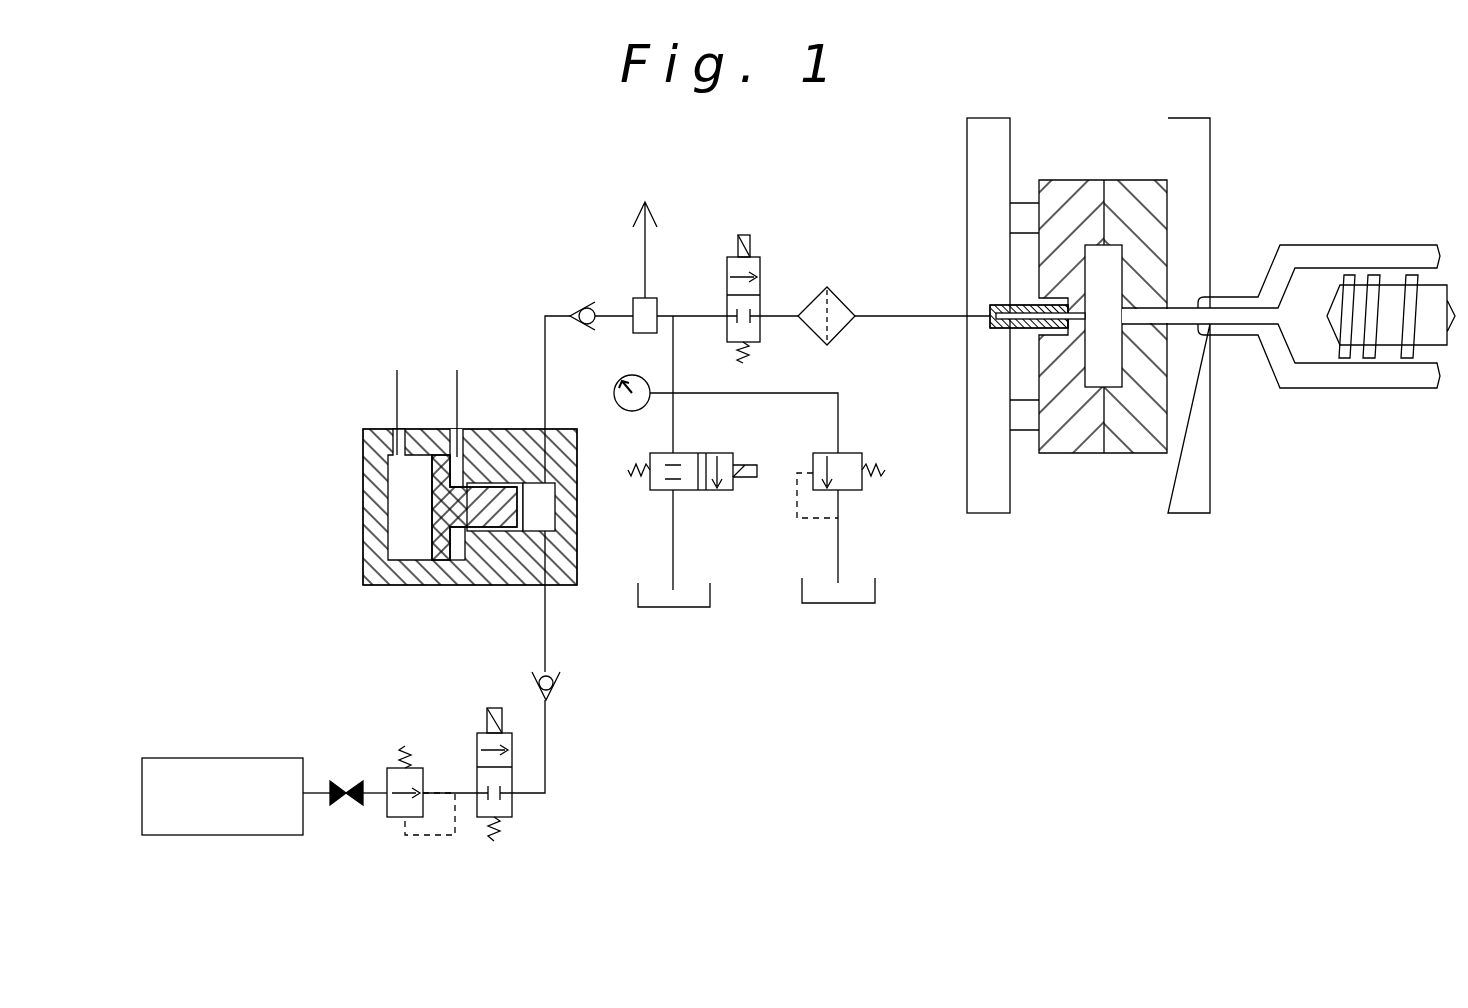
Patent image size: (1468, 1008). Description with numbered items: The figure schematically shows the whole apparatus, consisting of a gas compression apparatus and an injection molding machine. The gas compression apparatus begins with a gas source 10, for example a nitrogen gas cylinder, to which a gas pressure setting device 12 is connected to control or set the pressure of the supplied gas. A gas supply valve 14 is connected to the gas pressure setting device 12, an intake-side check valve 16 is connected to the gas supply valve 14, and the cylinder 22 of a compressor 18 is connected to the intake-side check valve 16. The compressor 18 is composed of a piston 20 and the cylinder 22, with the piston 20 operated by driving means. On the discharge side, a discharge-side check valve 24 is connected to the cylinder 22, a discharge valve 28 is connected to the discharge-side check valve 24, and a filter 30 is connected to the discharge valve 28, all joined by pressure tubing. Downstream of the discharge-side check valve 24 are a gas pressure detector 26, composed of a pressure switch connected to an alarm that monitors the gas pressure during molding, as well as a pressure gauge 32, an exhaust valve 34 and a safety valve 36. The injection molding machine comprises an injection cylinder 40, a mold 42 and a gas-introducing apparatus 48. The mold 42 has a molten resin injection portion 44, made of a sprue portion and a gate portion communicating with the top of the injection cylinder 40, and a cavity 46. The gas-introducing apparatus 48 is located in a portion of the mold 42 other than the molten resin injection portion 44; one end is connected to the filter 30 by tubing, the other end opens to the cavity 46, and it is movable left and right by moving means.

The gas source 10 is at (222, 780).
The gas pressure setting device 12 is at (418, 774).
The gas supply valve 14 is at (494, 757).
The intake-side check valve 16 is at (567, 692).
The compressor 18 is at (377, 503).
The piston 20 is at (476, 514).
The cylinder 22 is at (540, 508).
The discharge-side check valve 24 is at (591, 300).
The gas pressure detector 26 is at (627, 251).
The discharge valve 28 is at (747, 284).
The filter 30 is at (839, 306).
The pressure gauge 32 is at (616, 385).
The exhaust valve 34 is at (692, 454).
The safety valve 36 is at (843, 468).
The injection cylinder 40 is at (1350, 245).
The mold 42 is at (1084, 205).
The molten resin injection portion 44 is at (1137, 313).
The cavity 46 is at (1107, 373).
The gas-introducing apparatus 48 is at (1022, 330).